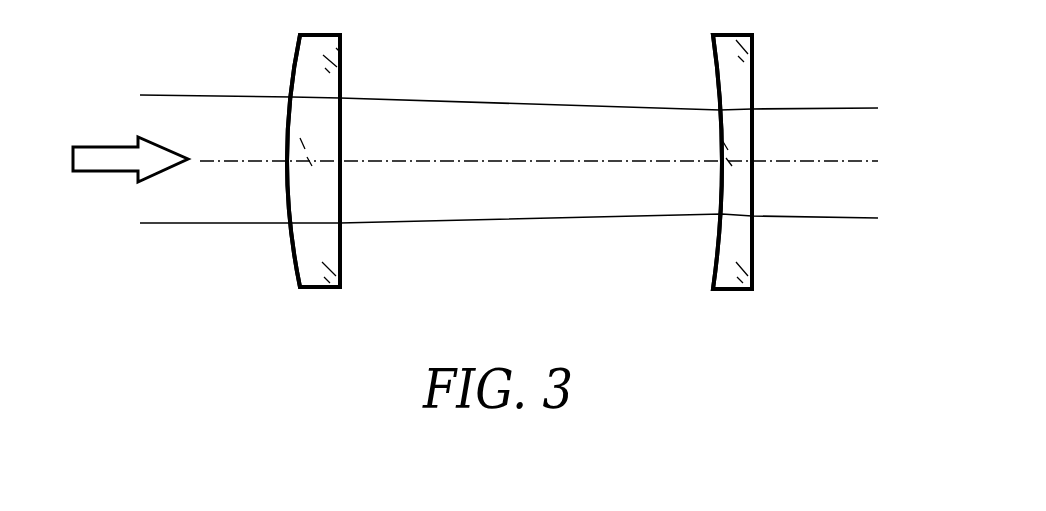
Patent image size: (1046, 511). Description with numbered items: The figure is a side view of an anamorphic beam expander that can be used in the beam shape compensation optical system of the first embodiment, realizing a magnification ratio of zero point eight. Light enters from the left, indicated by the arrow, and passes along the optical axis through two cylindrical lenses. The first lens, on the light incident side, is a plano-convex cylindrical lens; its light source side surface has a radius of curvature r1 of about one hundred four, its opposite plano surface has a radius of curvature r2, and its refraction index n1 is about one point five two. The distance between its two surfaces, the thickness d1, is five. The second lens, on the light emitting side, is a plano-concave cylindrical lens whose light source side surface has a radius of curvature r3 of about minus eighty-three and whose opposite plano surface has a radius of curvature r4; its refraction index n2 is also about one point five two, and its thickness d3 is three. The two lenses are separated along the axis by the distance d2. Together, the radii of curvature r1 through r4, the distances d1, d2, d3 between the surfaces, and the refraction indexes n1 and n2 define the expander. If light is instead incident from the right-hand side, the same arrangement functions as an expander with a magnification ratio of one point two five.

The radius of curvature r1 is at (292, 60).
The radius of curvature r2 is at (341, 51).
The radius of curvature r3 is at (717, 58).
The radius of curvature r4 is at (753, 51).
The refraction index n1 is at (322, 90).
The refraction index n2 is at (738, 98).
The distance between surfaces d1 is at (315, 162).
The distance between surfaces d2 is at (518, 161).
The distance between surfaces d3 is at (747, 162).